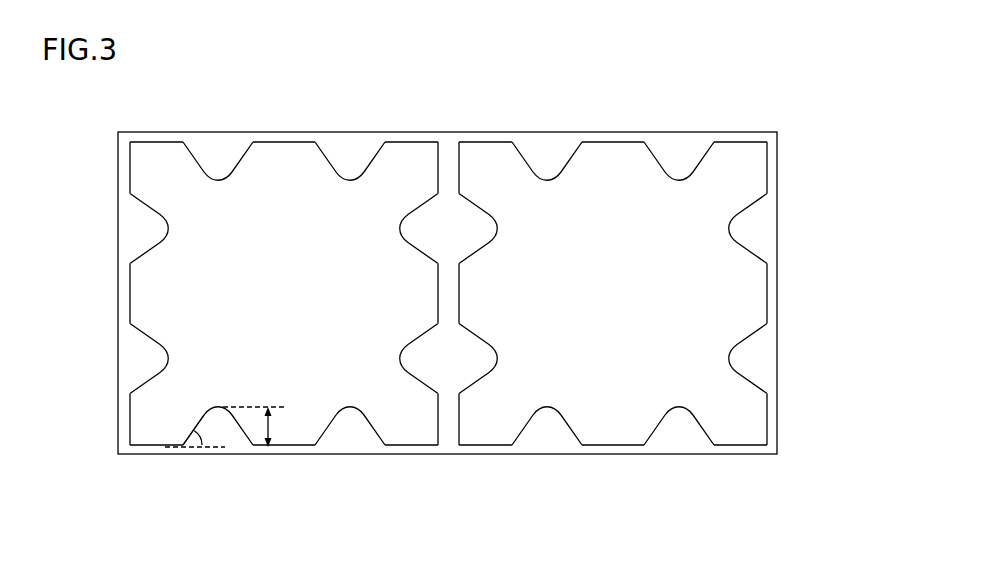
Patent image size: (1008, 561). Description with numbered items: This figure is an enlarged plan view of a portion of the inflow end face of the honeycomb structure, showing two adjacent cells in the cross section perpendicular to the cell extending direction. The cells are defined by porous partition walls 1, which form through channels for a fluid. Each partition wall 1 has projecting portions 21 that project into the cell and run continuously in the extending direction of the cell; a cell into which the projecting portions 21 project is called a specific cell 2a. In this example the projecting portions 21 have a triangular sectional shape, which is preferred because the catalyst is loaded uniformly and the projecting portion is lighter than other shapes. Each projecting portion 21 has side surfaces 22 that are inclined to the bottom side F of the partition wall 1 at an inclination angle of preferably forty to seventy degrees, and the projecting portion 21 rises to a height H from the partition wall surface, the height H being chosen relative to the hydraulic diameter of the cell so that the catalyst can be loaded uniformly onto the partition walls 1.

The partition wall 1 is at (457, 166).
The specific cell 2a is at (727, 178).
The projecting portion 21 is at (212, 158).
The side surface of the projecting portion 22 is at (200, 424).
The bottom side F is at (207, 446).
The height H is at (230, 427).